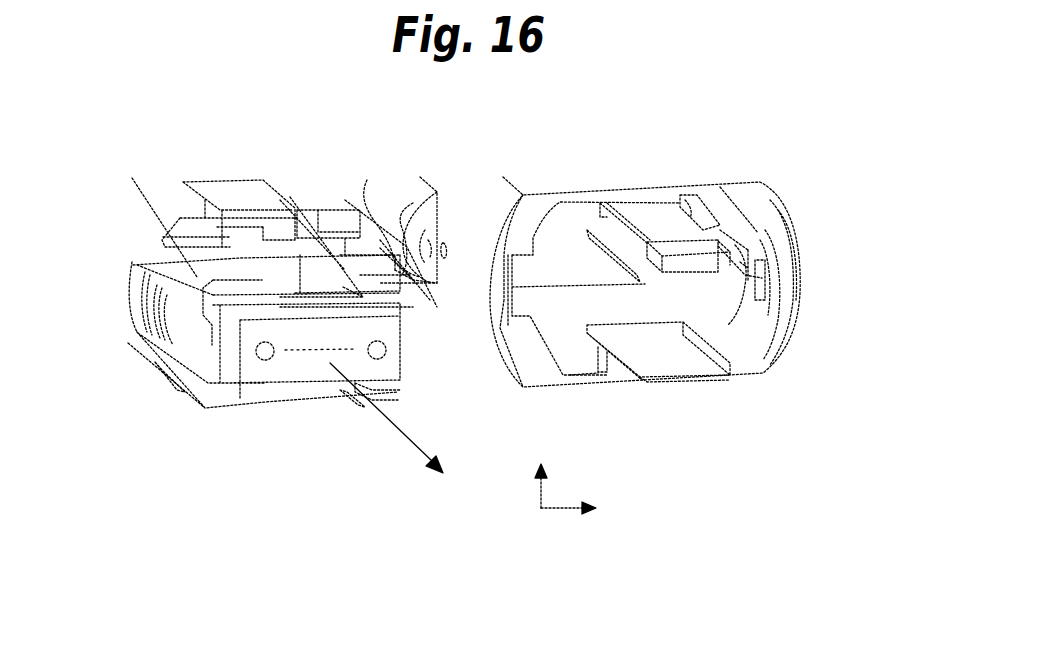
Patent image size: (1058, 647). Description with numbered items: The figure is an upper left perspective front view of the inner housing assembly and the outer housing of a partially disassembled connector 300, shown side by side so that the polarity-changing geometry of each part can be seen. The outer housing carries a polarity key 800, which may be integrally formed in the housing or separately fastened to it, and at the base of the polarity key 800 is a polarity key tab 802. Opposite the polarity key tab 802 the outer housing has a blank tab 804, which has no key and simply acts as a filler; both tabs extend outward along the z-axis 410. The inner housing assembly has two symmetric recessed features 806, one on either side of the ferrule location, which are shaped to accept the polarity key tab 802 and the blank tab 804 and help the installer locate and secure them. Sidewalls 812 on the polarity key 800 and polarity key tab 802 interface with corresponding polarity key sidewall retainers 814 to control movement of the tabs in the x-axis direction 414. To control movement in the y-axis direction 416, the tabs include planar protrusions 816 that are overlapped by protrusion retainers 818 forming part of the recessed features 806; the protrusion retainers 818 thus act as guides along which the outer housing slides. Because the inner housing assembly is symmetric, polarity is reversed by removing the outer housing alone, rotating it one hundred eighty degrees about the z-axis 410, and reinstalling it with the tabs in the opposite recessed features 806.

The MPO connector 300 is at (740, 120).
The z-axis 410 is at (406, 434).
The x-axis direction 414 is at (587, 513).
The y-axis direction 416 is at (543, 461).
The polarity key 800 is at (690, 264).
The polarity key tab 802 is at (713, 280).
The blank tab 804 is at (683, 370).
The recessed features 806 is at (293, 272).
The sidewalls 812 is at (707, 228).
The polarity key sidewall retainers 814 is at (243, 257).
The planar protrusions 816 is at (713, 282).
The protrusion retainers 818 is at (263, 285).